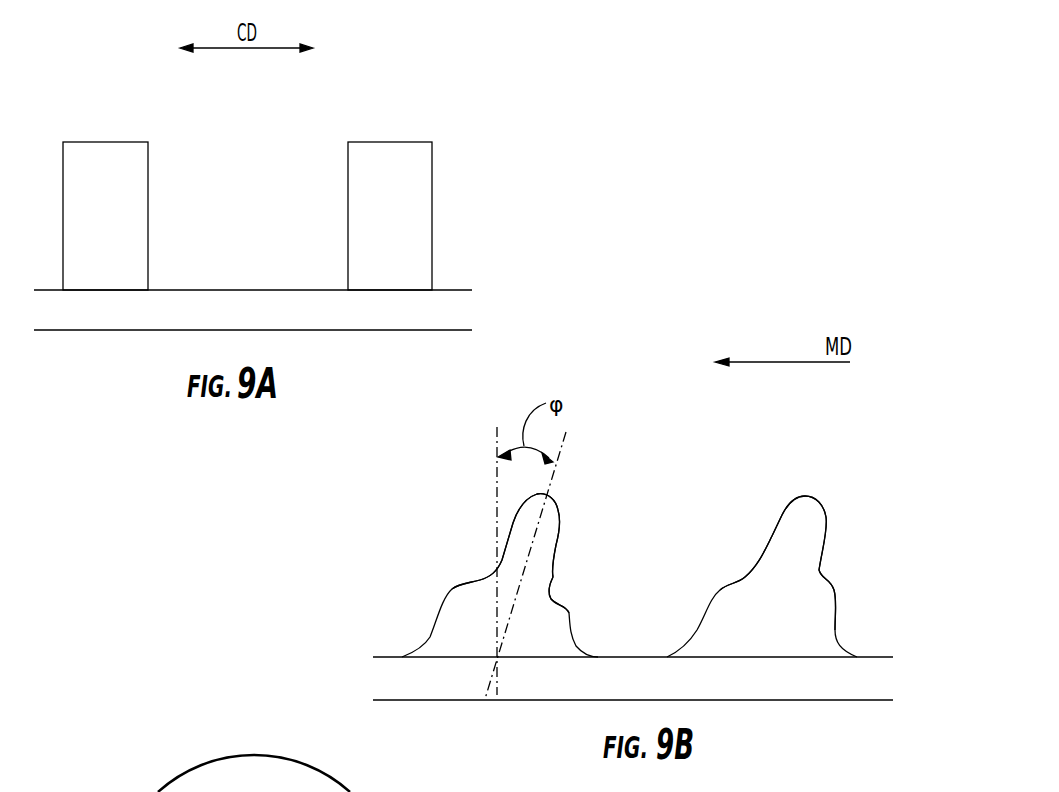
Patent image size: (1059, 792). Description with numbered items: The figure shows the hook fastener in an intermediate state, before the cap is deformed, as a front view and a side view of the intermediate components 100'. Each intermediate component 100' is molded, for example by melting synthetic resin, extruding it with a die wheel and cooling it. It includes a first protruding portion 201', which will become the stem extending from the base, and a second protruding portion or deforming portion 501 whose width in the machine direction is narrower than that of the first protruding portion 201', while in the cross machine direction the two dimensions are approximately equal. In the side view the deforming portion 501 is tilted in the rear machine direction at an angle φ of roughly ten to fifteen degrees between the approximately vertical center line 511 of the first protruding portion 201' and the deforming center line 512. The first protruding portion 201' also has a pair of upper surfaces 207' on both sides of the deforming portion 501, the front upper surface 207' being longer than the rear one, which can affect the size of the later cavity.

In FIG. 9A, the intermediate component 100' is at (247, 180).
In FIG. 9B, the intermediate component 100' is at (620, 524).
In FIG. 9B, the first protruding portion 201' is at (633, 693).
In FIG. 9B, the upper surface 207' is at (639, 569).
In FIG. 9B, the deforming portion 501 is at (547, 538).
In FIG. 9B, the center line 511 is at (496, 535).
In FIG. 9B, the deforming center line 512 is at (551, 481).